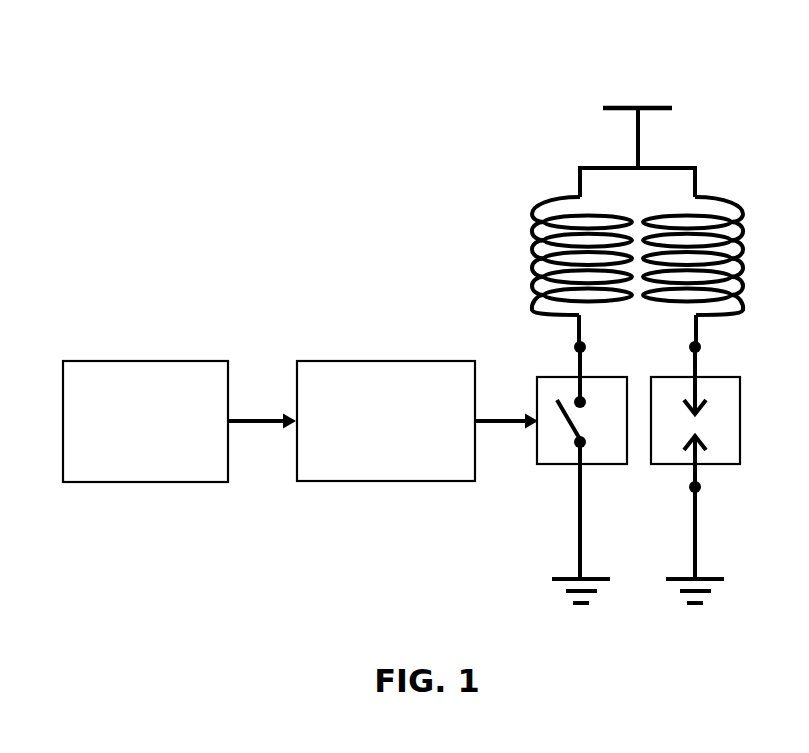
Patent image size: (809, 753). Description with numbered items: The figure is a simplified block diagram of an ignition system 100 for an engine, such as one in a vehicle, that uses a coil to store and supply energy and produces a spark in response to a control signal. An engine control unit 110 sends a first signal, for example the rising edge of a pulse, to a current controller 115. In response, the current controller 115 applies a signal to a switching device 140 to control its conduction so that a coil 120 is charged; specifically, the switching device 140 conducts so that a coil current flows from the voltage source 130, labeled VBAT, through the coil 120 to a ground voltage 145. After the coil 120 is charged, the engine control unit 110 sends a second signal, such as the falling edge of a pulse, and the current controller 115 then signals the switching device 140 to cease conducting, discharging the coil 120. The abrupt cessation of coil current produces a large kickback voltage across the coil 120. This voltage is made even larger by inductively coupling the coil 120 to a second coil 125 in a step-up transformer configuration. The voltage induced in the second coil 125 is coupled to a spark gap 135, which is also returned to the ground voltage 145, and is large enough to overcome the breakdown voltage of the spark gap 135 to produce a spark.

The ignition system 100 is at (184, 116).
The engine control unit 110 is at (120, 458).
The current controller 115 is at (361, 464).
The coil 120 is at (538, 193).
The second coil 125 is at (741, 193).
The voltage source 130 is at (668, 73).
The spark gap 135 is at (746, 373).
The switching device 140 is at (606, 373).
The ground voltage 145 is at (594, 575).